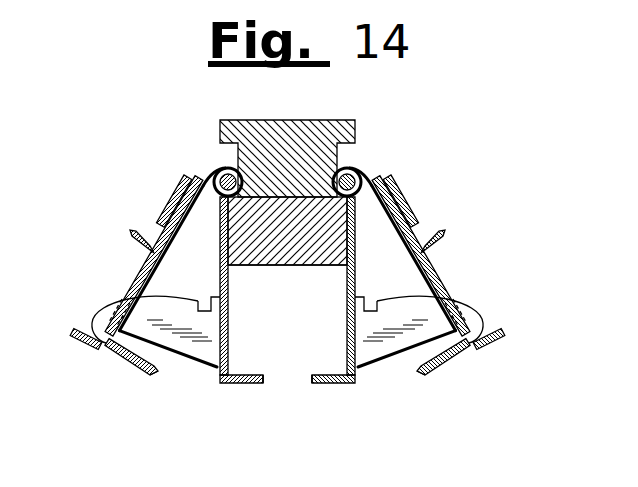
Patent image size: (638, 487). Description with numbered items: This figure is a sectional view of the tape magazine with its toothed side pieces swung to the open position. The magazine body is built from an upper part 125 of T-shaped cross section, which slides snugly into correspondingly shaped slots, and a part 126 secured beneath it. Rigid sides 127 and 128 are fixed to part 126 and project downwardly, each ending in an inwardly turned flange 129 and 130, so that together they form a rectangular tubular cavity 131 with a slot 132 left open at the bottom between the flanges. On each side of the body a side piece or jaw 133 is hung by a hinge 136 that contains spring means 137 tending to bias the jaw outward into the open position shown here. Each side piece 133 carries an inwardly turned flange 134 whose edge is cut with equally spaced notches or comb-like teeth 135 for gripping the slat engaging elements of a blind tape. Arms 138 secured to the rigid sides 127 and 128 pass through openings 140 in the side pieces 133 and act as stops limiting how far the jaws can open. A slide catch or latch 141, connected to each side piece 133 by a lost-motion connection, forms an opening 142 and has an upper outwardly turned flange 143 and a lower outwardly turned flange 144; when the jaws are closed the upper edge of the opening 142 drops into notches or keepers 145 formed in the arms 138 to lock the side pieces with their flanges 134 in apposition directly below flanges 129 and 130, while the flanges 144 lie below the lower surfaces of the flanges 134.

The upper part of the body portion 125 is at (292, 130).
The part of the body portion 126 is at (291, 262).
The rigid side 127 is at (221, 268).
The rigid side 128 is at (354, 268).
The inwardly turned flange 129 is at (246, 374).
The inwardly turned flange 130 is at (328, 374).
The rectangular tubular cavity 131 is at (287, 294).
The slot 132 is at (288, 378).
The side piece or jaw 133 is at (164, 222).
The inwardly turned flange 134 is at (133, 358).
The notches or comb-like teeth 135 is at (152, 373).
The hinge 136 is at (358, 169).
The spring means 137 is at (364, 181).
The arm 138 is at (198, 356).
The opening 140 is at (157, 279).
The slide catch or latch 141 is at (133, 268).
The opening 142 is at (127, 299).
The upper outwardly turned flange 143 is at (132, 234).
The lower outwardly turned flange 144 is at (74, 342).
The notches or keepers 145 is at (205, 298).